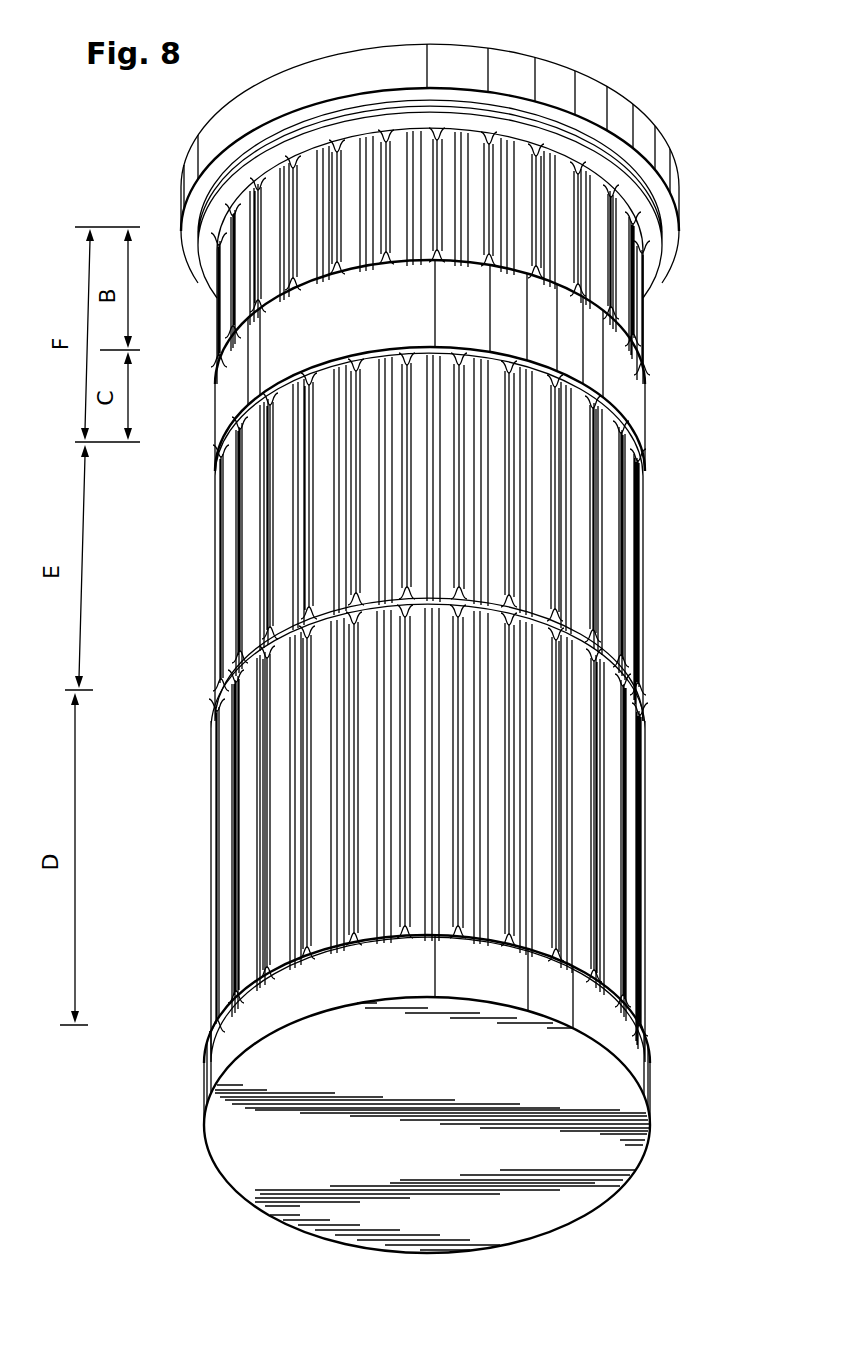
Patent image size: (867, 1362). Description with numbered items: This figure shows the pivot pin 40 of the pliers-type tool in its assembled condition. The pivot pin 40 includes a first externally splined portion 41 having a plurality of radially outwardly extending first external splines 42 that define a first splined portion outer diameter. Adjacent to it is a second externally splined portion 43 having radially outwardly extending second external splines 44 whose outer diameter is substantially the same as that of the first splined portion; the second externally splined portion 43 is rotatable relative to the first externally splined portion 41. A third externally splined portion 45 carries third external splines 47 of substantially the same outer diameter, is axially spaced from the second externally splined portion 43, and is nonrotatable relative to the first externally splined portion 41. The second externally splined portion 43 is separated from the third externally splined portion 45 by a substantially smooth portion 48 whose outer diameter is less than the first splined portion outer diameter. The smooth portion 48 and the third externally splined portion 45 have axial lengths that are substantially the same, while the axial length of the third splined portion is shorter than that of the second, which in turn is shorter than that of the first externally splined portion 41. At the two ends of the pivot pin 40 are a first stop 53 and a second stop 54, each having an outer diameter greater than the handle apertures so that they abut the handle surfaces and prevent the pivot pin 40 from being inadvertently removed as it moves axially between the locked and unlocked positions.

The pivot pin 40 is at (668, 947).
The first externally splined portion 41 is at (624, 830).
The first external splines 42 is at (600, 965).
The second externally splined portion 43 is at (612, 578).
The second external splines 44 is at (634, 520).
The third externally splined portion 45 is at (604, 305).
The third external splines 47 is at (590, 222).
The smooth portion 48 is at (260, 372).
The first stop 53 is at (468, 68).
The second stop 54 is at (517, 1217).